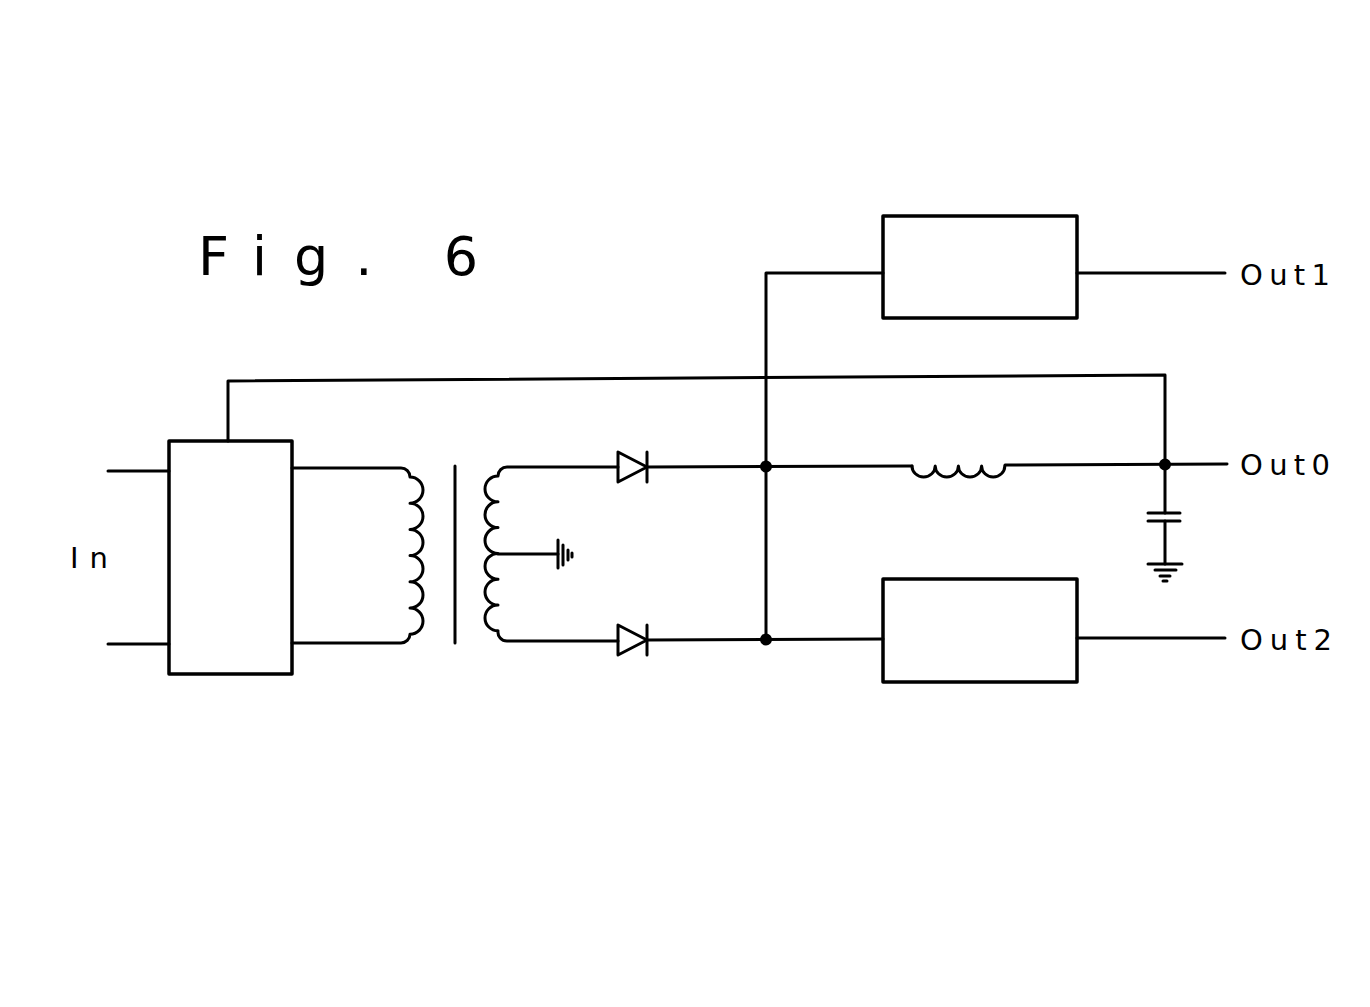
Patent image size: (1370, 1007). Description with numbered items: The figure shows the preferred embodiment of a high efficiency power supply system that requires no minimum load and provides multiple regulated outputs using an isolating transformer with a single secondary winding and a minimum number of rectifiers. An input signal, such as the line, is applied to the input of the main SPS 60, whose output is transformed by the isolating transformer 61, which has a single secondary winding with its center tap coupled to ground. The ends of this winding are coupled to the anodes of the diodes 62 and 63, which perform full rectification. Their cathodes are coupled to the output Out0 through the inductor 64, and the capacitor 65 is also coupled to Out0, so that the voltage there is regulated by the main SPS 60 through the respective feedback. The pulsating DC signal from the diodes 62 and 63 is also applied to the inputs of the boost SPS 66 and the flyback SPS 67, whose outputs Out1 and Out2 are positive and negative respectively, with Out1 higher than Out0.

The main SPS 60 is at (232, 674).
The isolating transformer 61 is at (455, 643).
The diode 62 is at (649, 482).
The diode 63 is at (649, 655).
The inductor 64 is at (999, 474).
The capacitor 65 is at (1178, 521).
The boost SPS 66 is at (1015, 318).
The flyback SPS 67 is at (1015, 682).